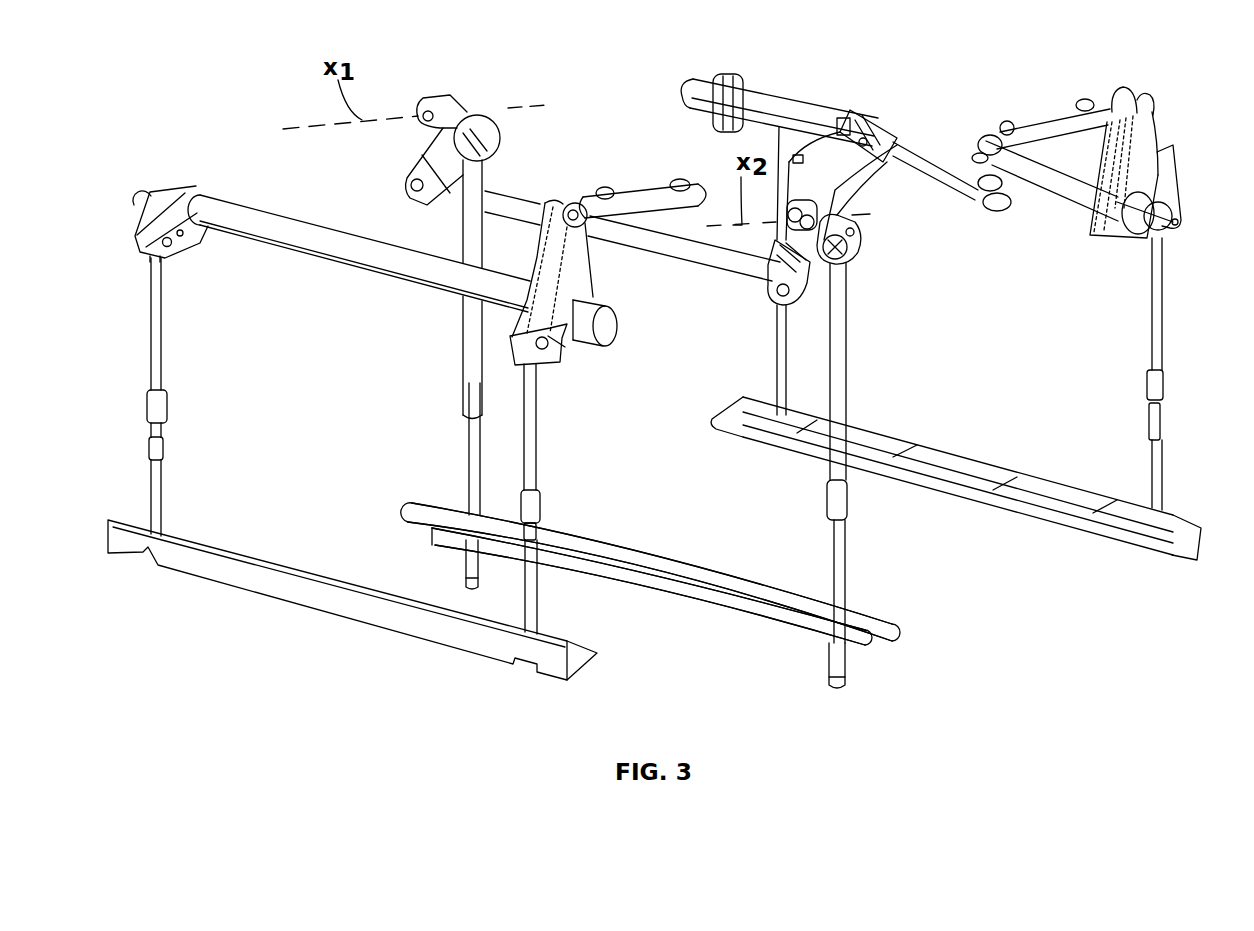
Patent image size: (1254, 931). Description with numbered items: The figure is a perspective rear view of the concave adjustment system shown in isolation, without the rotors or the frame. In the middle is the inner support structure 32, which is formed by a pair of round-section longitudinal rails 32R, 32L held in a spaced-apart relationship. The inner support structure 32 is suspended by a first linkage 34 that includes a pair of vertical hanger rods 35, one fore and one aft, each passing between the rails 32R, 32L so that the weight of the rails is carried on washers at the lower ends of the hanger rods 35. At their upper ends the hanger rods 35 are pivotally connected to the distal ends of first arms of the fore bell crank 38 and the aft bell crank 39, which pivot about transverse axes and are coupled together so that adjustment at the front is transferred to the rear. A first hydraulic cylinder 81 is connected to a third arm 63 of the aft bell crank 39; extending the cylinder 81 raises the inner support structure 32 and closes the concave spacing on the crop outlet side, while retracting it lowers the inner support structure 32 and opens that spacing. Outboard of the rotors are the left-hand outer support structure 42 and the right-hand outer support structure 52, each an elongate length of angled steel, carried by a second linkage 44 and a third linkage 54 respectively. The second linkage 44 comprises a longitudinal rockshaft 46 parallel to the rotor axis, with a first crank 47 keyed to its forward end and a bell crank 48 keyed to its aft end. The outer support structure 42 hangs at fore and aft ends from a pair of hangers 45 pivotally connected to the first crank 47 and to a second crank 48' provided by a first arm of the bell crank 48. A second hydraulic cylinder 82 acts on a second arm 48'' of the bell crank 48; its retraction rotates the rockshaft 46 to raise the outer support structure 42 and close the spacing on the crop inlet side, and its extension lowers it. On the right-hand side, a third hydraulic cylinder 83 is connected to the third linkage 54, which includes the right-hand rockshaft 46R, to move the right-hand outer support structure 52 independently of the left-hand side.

The inner support structure 32 is at (733, 600).
The left longitudinal rail 32L is at (677, 593).
The right longitudinal rail 32R is at (678, 560).
The first linkage 34 is at (845, 533).
The hanger rod 35 is at (470, 350).
The fore bell crank 38 is at (480, 114).
The aft bell crank 39 is at (858, 230).
The left-hand outer support structure 42 is at (357, 603).
The second linkage 44 is at (152, 320).
The hanger 45 is at (165, 369).
The rockshaft 46 is at (302, 234).
The right-hand rockshaft 46R is at (1057, 201).
The first crank 47 is at (190, 245).
The bell crank 48 is at (540, 268).
The second crank 48' is at (570, 362).
The second arm of bell crank 48'' is at (626, 309).
The right-hand outer support structure 52 is at (1047, 497).
The third linkage 54 is at (1162, 336).
The third arm of aft bell crank 63 is at (835, 162).
The first hydraulic cylinder 81 is at (960, 190).
The second hydraulic cylinder 82 is at (641, 194).
The third hydraulic cylinder 83 is at (1052, 118).